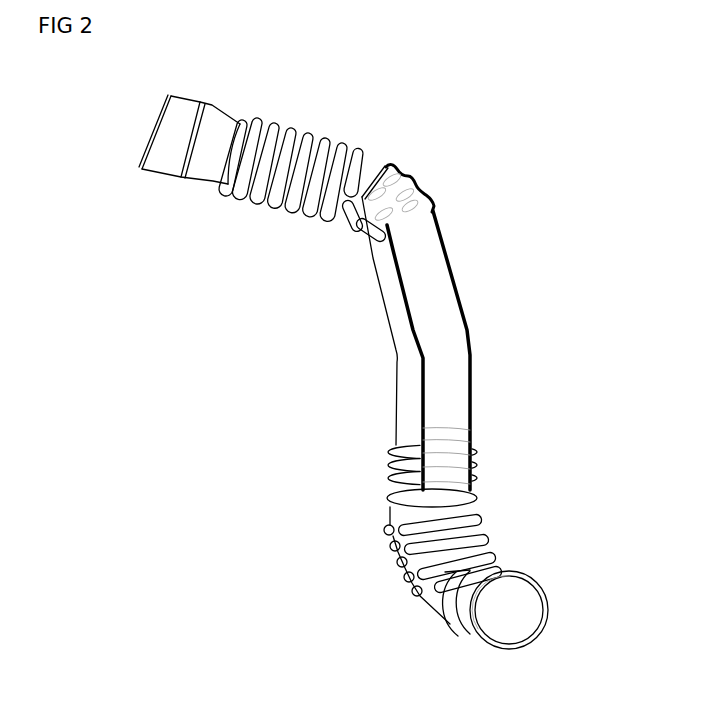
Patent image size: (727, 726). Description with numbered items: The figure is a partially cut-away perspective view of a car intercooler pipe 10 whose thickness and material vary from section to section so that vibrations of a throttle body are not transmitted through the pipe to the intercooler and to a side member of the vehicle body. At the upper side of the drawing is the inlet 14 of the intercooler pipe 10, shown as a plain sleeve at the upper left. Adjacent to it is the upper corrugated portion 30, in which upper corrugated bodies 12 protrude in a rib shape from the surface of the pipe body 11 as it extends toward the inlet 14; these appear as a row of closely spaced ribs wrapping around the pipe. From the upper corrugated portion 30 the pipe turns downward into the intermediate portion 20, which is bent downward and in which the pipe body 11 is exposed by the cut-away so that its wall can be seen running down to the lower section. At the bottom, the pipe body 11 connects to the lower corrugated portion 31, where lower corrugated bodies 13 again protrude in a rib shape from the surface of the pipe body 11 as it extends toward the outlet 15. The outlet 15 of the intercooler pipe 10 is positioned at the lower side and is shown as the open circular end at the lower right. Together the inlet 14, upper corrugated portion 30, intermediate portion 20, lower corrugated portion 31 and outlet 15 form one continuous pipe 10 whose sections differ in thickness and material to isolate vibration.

The intercooler pipe 10 is at (549, 113).
The pipe body 11 is at (402, 351).
The upper corrugated bodies 12 is at (230, 183).
The lower corrugated bodies 13 is at (387, 500).
The inlet 14 is at (165, 142).
The outlet 15 is at (522, 615).
The intermediate portion 20 is at (441, 209).
The upper corrugated portion 30 is at (442, 182).
The lower corrugated portion 31 is at (488, 444).